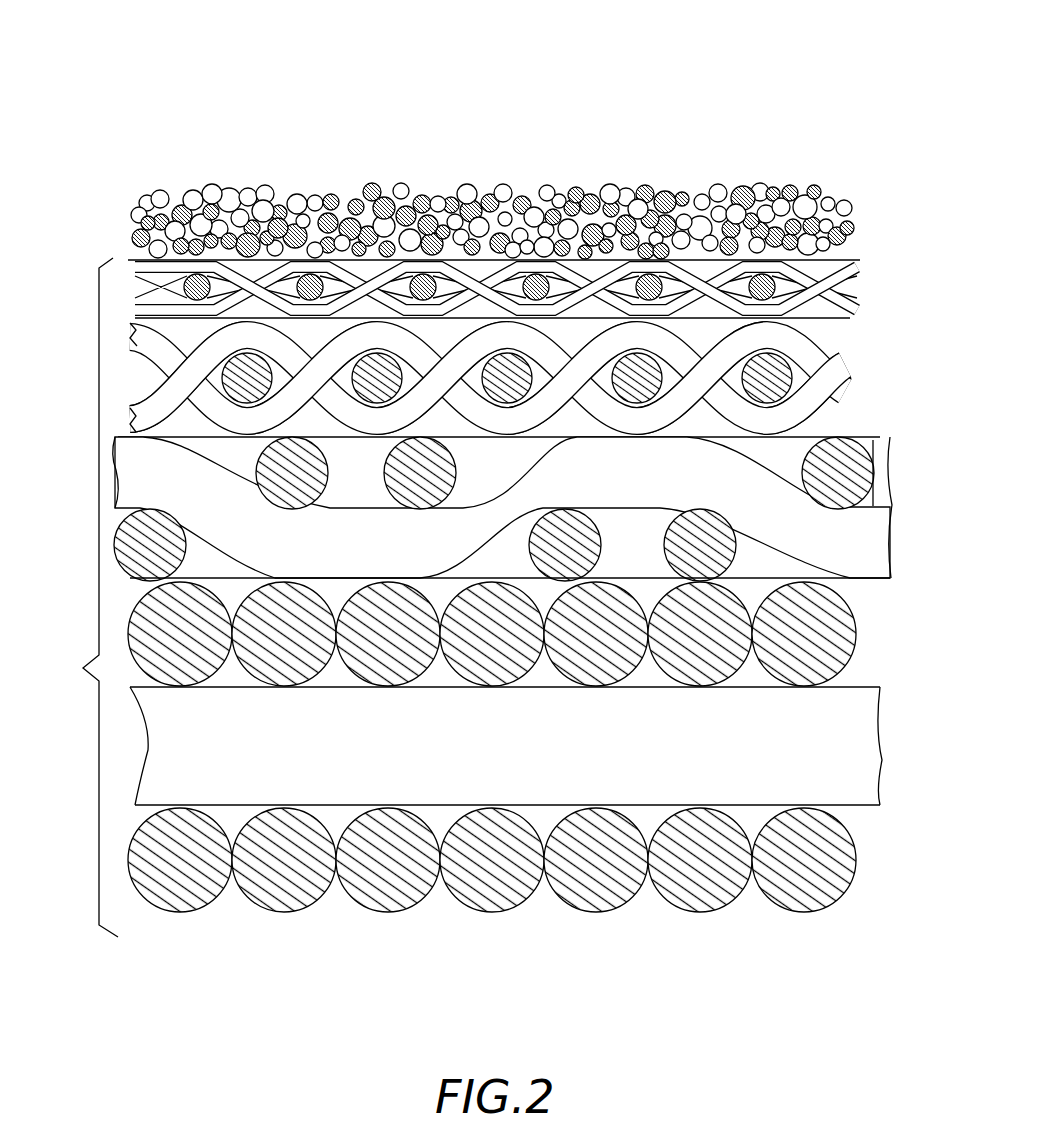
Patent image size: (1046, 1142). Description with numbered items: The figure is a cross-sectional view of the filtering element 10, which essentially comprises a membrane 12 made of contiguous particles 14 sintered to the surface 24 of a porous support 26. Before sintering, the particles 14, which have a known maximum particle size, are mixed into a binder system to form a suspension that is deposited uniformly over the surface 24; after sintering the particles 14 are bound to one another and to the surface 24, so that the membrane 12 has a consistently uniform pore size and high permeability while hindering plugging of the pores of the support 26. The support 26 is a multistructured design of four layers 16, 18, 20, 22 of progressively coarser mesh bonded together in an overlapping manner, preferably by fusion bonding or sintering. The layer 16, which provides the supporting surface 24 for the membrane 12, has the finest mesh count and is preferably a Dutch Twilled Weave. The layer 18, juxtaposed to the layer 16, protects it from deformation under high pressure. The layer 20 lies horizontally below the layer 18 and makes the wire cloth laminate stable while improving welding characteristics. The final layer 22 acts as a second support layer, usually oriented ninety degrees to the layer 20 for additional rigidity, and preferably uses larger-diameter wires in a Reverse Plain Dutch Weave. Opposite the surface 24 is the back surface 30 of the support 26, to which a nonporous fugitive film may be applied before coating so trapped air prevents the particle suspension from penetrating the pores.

The filtering element 10 is at (580, 86).
The membrane 12 is at (800, 176).
The particles 14 is at (197, 182).
The layer 16 is at (862, 265).
The layer 18 is at (840, 393).
The layer 20 is at (870, 582).
The layer 22 is at (852, 705).
The surface 24 is at (785, 300).
The porous support 26 is at (82, 668).
The back surface 30 is at (476, 913).